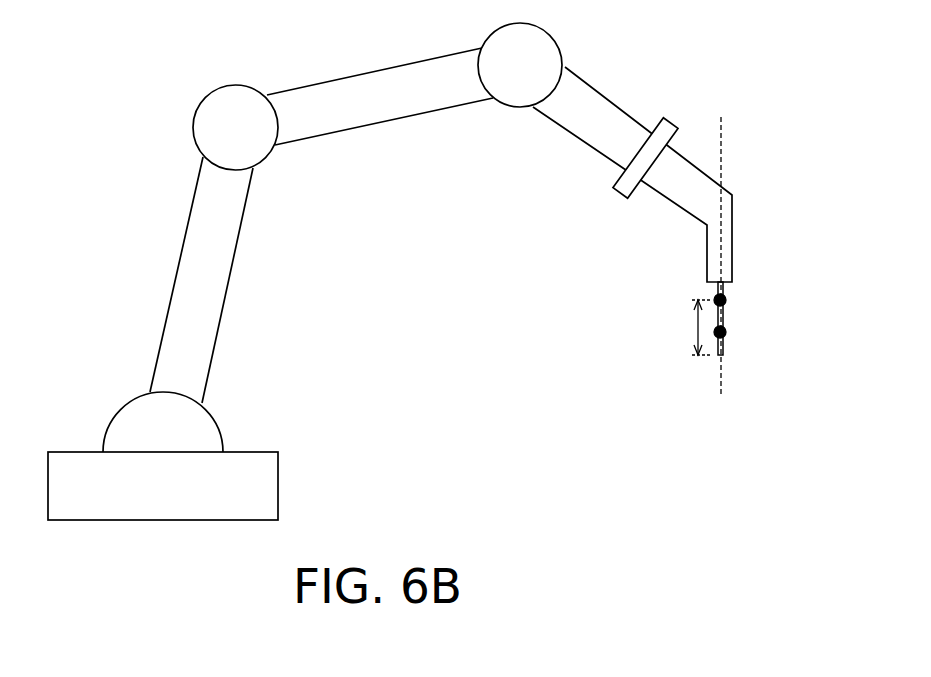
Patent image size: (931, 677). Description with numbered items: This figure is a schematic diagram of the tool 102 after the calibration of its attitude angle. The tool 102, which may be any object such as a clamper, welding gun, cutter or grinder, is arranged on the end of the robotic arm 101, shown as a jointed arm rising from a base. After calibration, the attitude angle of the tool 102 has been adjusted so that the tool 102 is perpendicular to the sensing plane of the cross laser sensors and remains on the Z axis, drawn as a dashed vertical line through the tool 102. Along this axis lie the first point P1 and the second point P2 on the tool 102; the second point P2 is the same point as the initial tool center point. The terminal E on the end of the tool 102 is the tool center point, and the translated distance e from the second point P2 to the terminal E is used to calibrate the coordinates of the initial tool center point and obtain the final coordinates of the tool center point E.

The robotic arm 101 is at (415, 265).
The tool 102 is at (692, 192).
The terminal E is at (720, 357).
The Z axis Z is at (720, 241).
The first point P1 is at (726, 332).
The second point P2 is at (726, 300).
The translated distance e is at (698, 329).